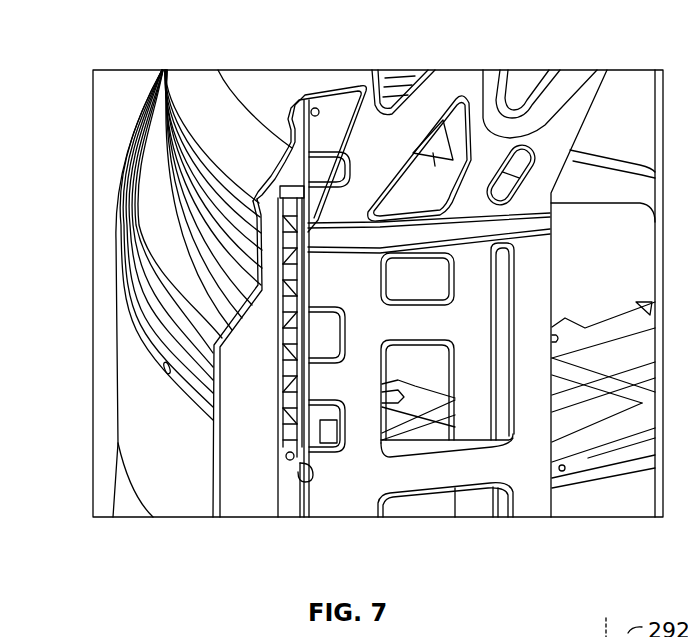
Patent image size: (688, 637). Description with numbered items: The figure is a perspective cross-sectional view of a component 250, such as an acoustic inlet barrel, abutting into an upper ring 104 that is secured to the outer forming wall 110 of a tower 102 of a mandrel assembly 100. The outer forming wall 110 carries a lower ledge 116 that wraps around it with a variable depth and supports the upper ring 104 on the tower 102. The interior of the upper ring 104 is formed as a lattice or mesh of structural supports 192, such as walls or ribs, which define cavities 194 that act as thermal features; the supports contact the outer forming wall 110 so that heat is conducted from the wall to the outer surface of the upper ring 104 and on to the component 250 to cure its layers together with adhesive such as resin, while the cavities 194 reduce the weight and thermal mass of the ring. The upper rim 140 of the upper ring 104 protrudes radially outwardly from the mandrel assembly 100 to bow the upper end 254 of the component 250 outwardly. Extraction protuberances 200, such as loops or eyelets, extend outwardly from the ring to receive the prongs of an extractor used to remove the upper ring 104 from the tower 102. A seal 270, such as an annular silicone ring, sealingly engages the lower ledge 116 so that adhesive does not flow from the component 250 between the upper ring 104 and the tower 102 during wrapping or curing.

The mandrel assembly 100 is at (578, 98).
The tower 102 is at (310, 280).
The upper ring 104 is at (256, 203).
The outer forming wall 110 is at (307, 233).
The lower ledge 116 is at (300, 462).
The upper rim 140 is at (183, 92).
The structural supports 192 is at (338, 222).
The cavities 194 is at (285, 189).
The extraction protuberances 200 is at (304, 97).
The component 250 is at (187, 455).
The upper end 254 is at (130, 248).
The seal 270 is at (287, 458).